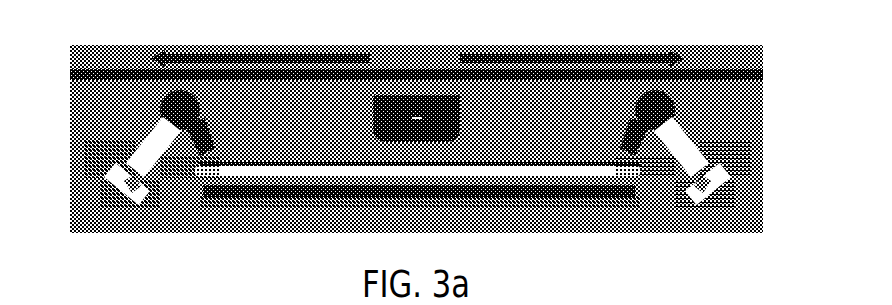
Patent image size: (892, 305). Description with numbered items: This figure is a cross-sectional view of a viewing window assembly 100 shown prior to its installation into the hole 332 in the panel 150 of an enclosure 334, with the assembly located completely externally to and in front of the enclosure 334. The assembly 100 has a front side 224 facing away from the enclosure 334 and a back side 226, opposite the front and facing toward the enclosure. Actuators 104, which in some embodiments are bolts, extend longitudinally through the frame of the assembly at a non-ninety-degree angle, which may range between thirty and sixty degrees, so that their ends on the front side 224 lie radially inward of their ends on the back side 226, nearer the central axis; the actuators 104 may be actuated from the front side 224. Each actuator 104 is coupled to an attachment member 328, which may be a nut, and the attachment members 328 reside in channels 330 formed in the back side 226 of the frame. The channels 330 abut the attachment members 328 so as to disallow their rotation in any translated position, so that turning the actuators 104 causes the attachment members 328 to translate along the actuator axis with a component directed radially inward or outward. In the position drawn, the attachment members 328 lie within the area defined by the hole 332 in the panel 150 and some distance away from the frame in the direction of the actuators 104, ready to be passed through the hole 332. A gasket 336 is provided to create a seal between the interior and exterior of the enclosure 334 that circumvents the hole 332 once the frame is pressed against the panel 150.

The viewing window assembly 100 is at (205, 233).
The actuators 104 is at (500, 200).
The panel 150 is at (132, 67).
The front side 224 is at (600, 235).
The back side 226 is at (582, 98).
The attachment members 328 is at (635, 138).
The channels 330 is at (140, 131).
The hole 332 is at (241, 62).
The enclosure 334 is at (366, 34).
The gasket 336 is at (720, 143).